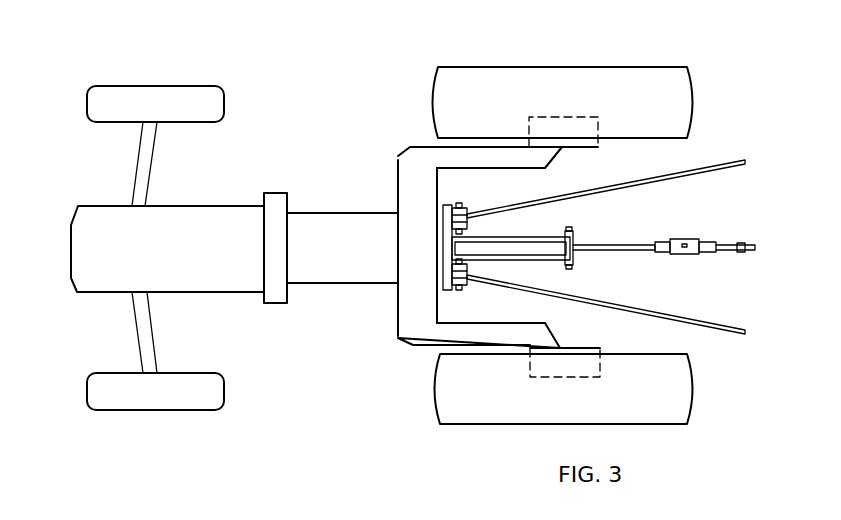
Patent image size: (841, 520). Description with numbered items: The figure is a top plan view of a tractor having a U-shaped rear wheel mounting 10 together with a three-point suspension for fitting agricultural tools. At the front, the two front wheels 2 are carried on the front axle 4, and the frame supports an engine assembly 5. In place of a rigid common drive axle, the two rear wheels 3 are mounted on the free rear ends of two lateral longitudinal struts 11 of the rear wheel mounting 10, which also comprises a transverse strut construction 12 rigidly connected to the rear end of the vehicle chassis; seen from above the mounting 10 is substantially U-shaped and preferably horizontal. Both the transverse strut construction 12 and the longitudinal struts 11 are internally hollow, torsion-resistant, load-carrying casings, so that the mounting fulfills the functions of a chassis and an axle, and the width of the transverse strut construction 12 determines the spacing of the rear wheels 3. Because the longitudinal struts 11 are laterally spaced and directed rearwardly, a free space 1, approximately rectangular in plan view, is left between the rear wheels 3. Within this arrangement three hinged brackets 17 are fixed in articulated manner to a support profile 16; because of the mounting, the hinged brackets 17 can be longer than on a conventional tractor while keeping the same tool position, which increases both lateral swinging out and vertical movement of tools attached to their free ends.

The free space 1 is at (599, 267).
The front wheels 2 is at (118, 93).
The rear wheels 3 is at (457, 74).
The front axle 4 is at (141, 328).
The engine assembly 5 is at (213, 215).
The rear wheel mounting 10 is at (392, 158).
The longitudinal struts 11 is at (551, 164).
The transverse strut construction 12 is at (398, 306).
The support profile 16 is at (451, 205).
The hinged brackets 17 is at (710, 172).